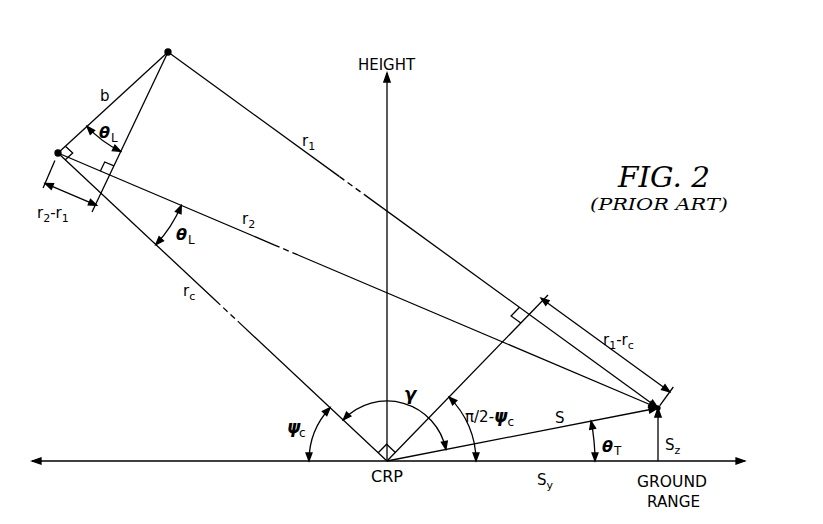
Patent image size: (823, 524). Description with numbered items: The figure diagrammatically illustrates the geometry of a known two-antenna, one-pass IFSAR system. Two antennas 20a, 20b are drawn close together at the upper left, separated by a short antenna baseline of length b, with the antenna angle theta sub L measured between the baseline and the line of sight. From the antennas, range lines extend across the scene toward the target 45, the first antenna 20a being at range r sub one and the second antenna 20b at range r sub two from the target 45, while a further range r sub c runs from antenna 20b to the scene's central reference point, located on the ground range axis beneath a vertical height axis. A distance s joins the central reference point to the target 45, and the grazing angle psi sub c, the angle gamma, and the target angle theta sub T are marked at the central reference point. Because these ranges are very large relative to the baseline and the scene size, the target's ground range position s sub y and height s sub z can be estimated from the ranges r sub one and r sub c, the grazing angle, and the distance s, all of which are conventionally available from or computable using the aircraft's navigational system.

The antenna 20a is at (171, 48).
The antenna 20b is at (56, 149).
The target 45 is at (661, 409).